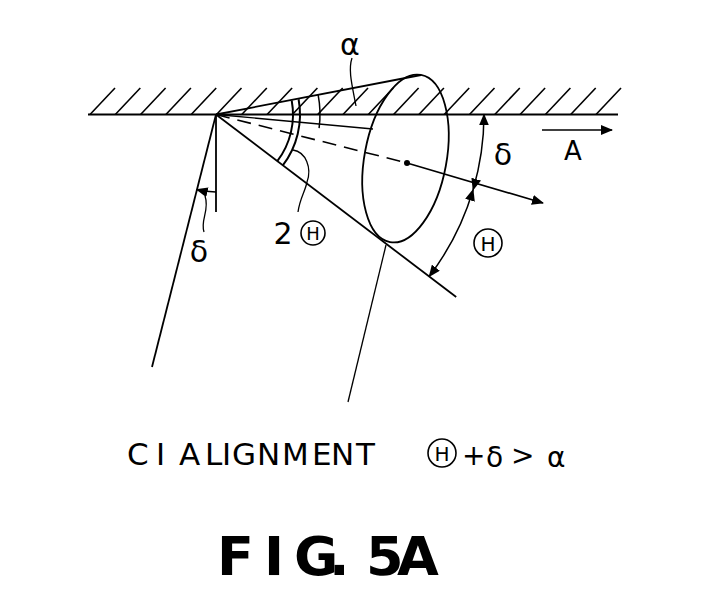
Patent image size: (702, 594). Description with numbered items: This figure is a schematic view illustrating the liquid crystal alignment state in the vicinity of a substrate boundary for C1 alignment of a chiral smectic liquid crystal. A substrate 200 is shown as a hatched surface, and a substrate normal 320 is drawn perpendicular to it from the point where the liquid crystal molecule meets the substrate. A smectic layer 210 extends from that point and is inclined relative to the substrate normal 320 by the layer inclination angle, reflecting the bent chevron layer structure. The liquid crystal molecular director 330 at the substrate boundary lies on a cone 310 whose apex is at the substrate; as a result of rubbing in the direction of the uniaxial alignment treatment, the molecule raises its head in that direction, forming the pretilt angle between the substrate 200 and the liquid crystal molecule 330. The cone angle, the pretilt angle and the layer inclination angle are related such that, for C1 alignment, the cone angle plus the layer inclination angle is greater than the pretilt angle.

The substrate 200 is at (130, 116).
The smectic layer 210 is at (157, 343).
The cone 310 is at (392, 79).
The substrate normal 320 is at (218, 162).
The liquid crystal molecular director 330 is at (320, 94).